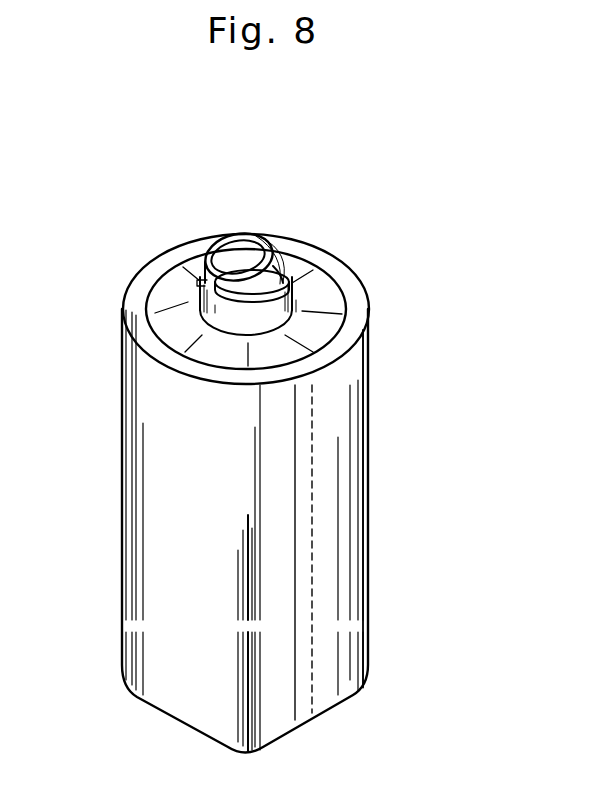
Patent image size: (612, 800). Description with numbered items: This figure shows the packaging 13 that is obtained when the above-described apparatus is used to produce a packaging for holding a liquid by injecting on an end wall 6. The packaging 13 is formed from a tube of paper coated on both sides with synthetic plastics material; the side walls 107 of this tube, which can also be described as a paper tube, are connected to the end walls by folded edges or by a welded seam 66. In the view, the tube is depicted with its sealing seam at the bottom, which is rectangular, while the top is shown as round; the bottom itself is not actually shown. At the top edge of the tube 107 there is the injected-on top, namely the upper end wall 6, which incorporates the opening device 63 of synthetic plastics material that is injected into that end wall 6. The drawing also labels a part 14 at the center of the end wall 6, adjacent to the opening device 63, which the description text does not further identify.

The opening device 63 is at (226, 224).
The end wall 6 is at (308, 300).
The pouring spout 14 is at (263, 310).
The packaging 13 is at (122, 529).
The side walls 107 is at (369, 558).
The welded seam 66 is at (302, 643).